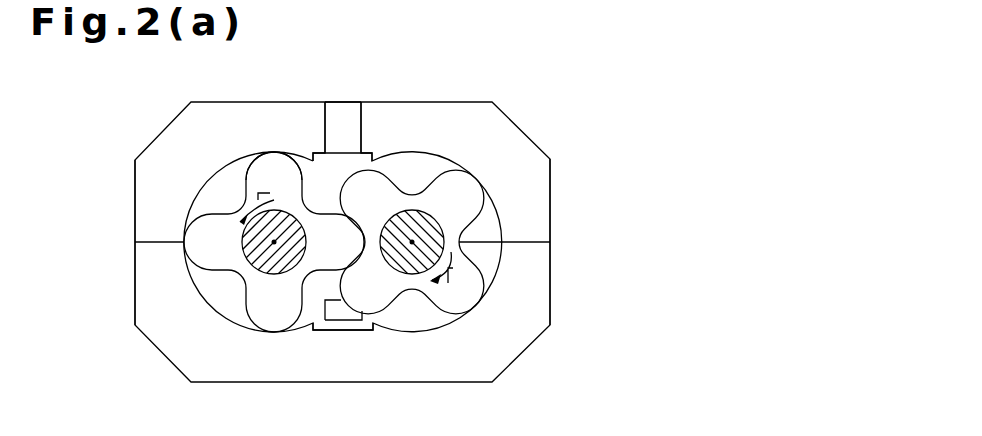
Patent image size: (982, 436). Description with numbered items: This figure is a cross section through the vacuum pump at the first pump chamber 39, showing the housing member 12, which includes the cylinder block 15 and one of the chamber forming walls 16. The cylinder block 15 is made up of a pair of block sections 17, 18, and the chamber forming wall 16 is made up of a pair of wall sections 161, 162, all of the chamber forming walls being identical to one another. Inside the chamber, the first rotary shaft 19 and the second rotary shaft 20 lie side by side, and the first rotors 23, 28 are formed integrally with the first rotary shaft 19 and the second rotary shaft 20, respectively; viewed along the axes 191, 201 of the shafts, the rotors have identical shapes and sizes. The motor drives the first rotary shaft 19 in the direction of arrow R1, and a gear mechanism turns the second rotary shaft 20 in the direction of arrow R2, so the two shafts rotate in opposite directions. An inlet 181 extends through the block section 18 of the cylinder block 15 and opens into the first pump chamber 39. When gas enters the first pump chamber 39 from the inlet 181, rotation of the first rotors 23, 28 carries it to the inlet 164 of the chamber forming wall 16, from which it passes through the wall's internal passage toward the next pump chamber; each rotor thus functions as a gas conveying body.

The member 12 is at (191, 102).
The cylinder block 15 is at (75, 210).
The chamber forming wall 16 is at (617, 212).
The block section 17 is at (143, 256).
The block section 18 is at (143, 221).
The first rotary shaft 19 is at (392, 259).
The second rotary shaft 20 is at (282, 271).
The first rotor 23 is at (468, 177).
The first rotor 28 is at (275, 153).
The first pump chamber 39 is at (336, 183).
The wall section 161 is at (495, 257).
The wall section 162 is at (495, 228).
The inlet 164 is at (328, 312).
The inlet 181 is at (360, 114).
The axis 191 is at (416, 238).
The axis 201 is at (272, 241).
The arrow R1 is at (451, 281).
The arrow R2 is at (267, 199).